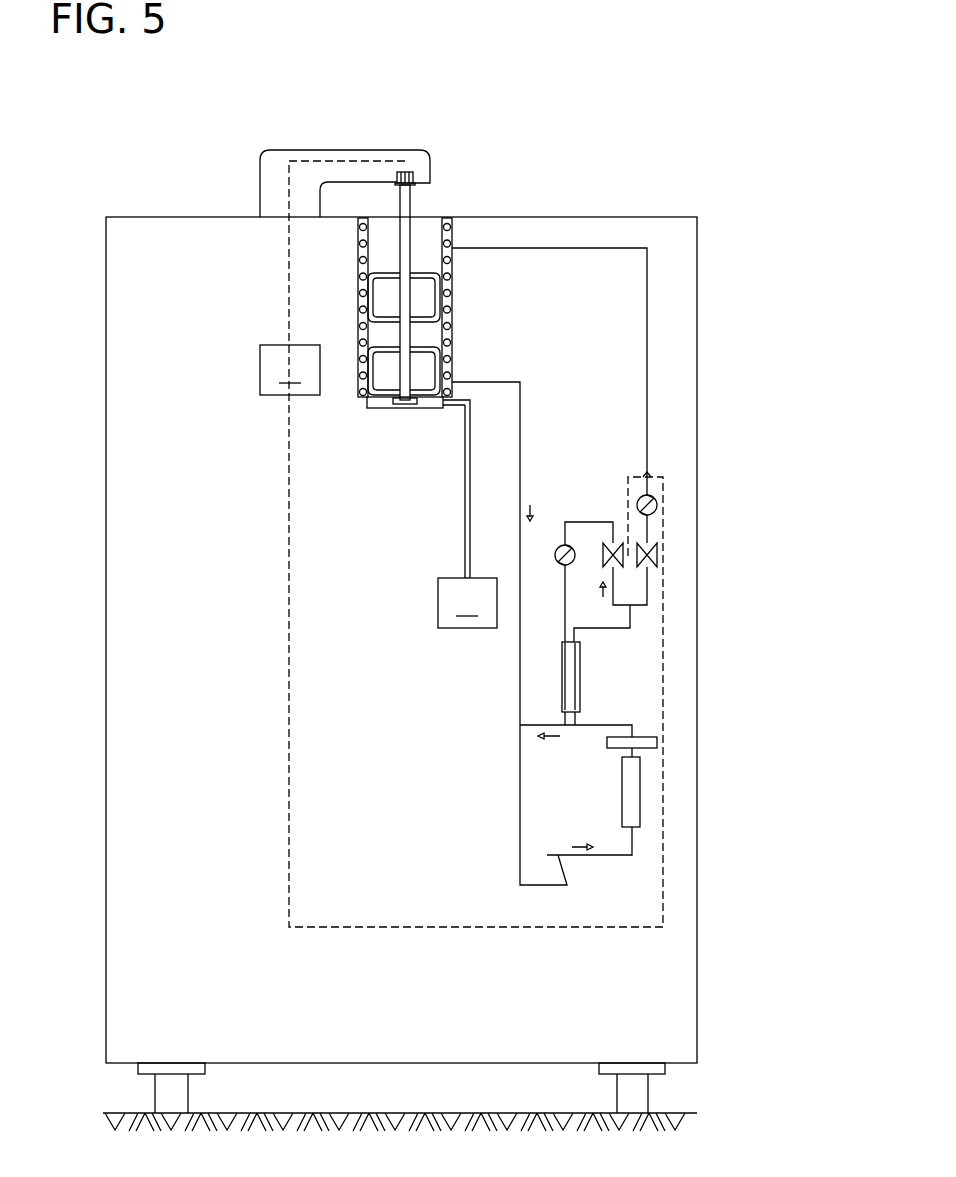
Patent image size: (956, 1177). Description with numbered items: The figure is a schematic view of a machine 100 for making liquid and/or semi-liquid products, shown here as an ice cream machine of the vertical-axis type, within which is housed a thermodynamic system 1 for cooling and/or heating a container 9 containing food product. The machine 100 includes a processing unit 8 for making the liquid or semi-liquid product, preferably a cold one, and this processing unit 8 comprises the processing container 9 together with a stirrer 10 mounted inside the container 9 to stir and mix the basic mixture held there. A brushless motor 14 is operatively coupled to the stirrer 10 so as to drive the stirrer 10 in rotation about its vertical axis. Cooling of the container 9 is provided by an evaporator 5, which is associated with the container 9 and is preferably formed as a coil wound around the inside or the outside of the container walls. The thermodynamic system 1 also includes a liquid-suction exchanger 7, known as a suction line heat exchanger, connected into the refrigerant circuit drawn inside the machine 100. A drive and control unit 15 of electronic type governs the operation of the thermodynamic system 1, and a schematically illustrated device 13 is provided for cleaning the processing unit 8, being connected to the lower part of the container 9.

The thermodynamic system 1 is at (617, 793).
The evaporator 5 is at (455, 302).
The liquid-suction exchanger 7 is at (555, 670).
The processing unit 8 is at (455, 355).
The processing container 9 is at (430, 225).
The stirrer 10 is at (382, 400).
The cleaning device 13 is at (467, 514).
The brushless motor 14 is at (411, 169).
The drive and control unit 15 is at (290, 370).
The machine for making liquid and/or semi-liquid products 100 is at (582, 207).